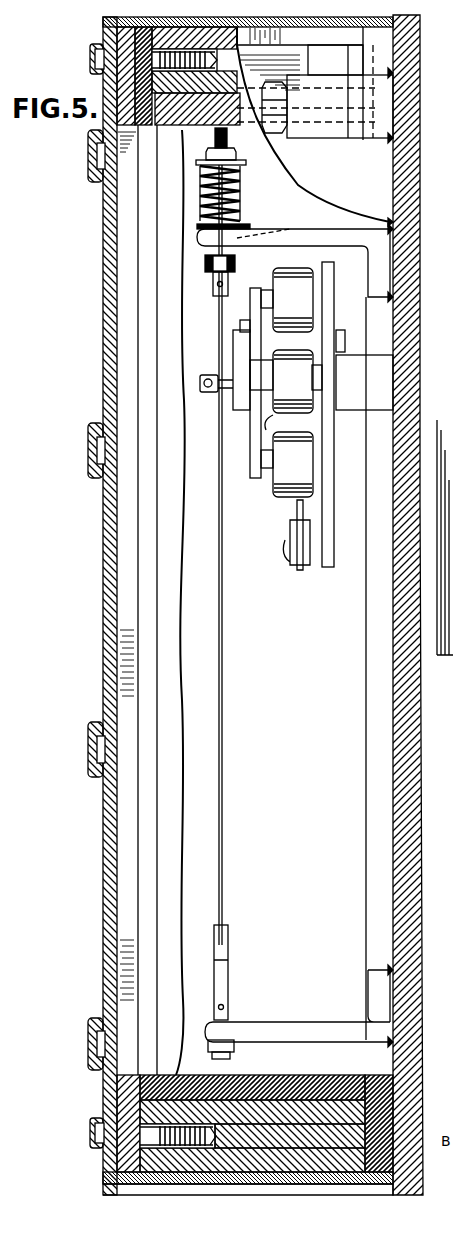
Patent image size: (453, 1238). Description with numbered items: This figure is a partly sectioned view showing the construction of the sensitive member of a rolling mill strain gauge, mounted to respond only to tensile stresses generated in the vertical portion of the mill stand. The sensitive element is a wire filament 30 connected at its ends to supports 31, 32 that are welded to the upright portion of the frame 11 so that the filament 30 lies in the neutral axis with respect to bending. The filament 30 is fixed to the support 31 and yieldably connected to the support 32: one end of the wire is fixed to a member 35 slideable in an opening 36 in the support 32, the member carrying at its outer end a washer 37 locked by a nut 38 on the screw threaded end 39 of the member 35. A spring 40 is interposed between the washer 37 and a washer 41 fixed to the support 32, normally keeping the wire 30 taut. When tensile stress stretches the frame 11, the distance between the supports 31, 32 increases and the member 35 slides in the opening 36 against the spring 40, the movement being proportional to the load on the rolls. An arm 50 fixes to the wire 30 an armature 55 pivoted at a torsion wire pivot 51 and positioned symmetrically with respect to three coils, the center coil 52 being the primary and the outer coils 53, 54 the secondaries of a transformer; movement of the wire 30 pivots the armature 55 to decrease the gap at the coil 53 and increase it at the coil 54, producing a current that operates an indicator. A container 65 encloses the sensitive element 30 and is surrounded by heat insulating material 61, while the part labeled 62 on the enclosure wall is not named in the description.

The frame 11 is at (405, 269).
The wire filament 30 is at (226, 669).
The support 31 is at (300, 1025).
The support 32 is at (337, 221).
The member 35 is at (228, 256).
The opening 36 is at (295, 257).
The washer 37 is at (207, 162).
The nut 38 is at (238, 160).
The screw threaded end 39 is at (214, 136).
The spring 40 is at (241, 194).
The washer 41 is at (236, 224).
The arm 50 is at (212, 375).
The pivot 51 is at (280, 424).
The center coil 52 is at (286, 381).
The outer coil 53 is at (287, 464).
The outer coil 54 is at (287, 300).
The armature 55 is at (262, 478).
The heat insulating material 61 is at (148, 850).
The door frame wall 62 is at (105, 822).
The container 65 is at (126, 900).